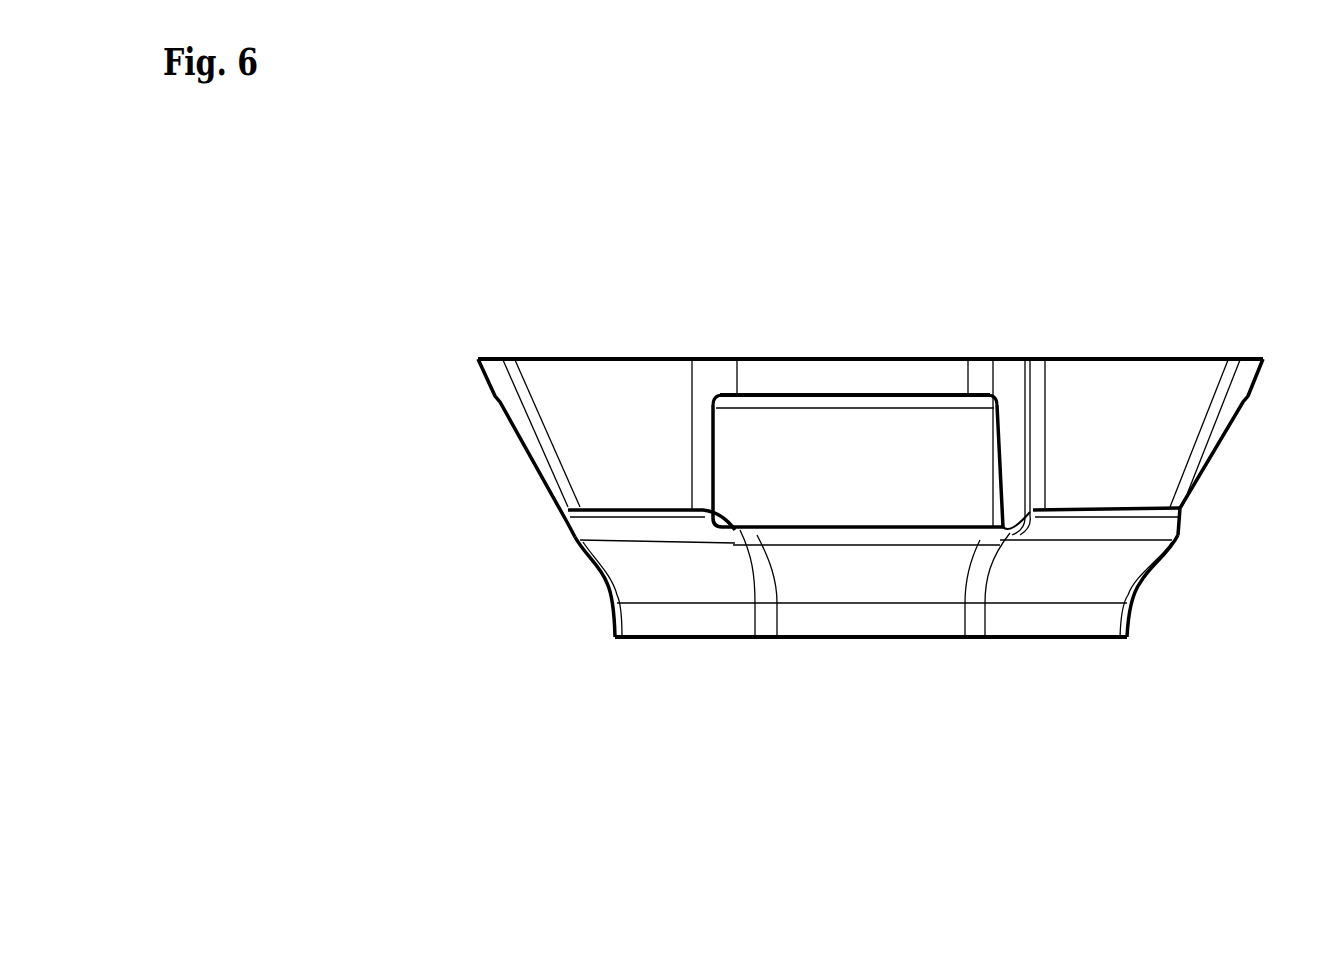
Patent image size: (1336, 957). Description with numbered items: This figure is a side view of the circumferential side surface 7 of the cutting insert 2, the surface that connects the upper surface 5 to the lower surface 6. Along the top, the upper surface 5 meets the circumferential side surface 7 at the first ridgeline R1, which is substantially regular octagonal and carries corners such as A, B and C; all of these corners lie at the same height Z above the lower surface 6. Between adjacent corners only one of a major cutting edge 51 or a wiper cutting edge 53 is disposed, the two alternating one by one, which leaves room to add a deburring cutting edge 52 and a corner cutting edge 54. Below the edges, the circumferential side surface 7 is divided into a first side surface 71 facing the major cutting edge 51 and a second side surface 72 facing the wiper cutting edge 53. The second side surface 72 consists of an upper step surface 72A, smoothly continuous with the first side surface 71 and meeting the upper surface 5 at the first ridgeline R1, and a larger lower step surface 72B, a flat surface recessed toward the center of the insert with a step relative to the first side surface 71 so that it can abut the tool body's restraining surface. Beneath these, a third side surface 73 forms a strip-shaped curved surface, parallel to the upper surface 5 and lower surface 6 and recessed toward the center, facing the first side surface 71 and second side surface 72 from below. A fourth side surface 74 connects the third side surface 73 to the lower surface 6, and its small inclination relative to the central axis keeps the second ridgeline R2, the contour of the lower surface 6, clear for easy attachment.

The cutting insert 2 is at (876, 877).
The upper surface 5 is at (538, 355).
The major cutting edge 51 is at (602, 357).
The deburring cutting edge 52 is at (1030, 357).
The wiper cutting edge 53 is at (855, 357).
The corner cutting edge 54 is at (722, 357).
The lower surface 6 is at (735, 638).
The circumferential side surface 7 is at (588, 468).
The first side surface 71 is at (1130, 440).
The second side surface 72 is at (981, 303).
The upper step surface 72A is at (897, 372).
The lower step surface 72B is at (922, 450).
The third side surface 73 is at (850, 580).
The fourth side surface 74 is at (883, 620).
The first ridgeline R1 is at (480, 358).
The second ridgeline R2 is at (615, 637).
The corner A is at (1262, 357).
The corner B is at (1012, 357).
The corner C is at (713, 357).
The height Z is at (1012, 672).